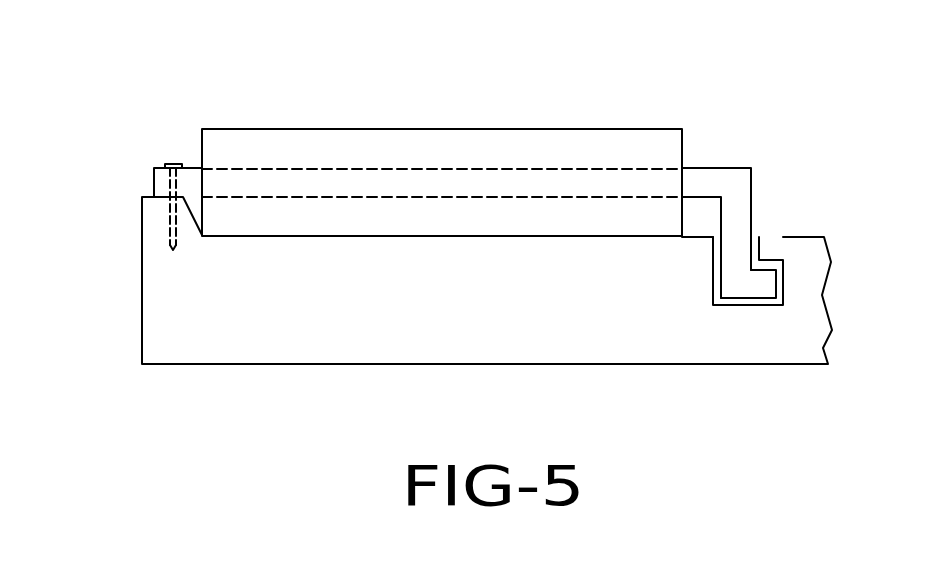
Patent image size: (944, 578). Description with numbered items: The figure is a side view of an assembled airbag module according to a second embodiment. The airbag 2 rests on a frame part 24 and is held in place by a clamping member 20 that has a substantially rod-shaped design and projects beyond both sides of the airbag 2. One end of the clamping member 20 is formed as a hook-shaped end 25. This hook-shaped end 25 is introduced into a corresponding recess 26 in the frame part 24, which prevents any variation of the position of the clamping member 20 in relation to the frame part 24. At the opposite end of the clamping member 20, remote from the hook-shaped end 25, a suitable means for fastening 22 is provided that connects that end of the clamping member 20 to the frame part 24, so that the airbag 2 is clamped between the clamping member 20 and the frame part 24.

The airbag 2 is at (410, 145).
The clamping member 20 is at (708, 187).
The means for fastening 22 is at (168, 165).
The frame part 24 is at (347, 302).
The hook-shaped end 25 is at (745, 285).
The recess 26 is at (744, 305).